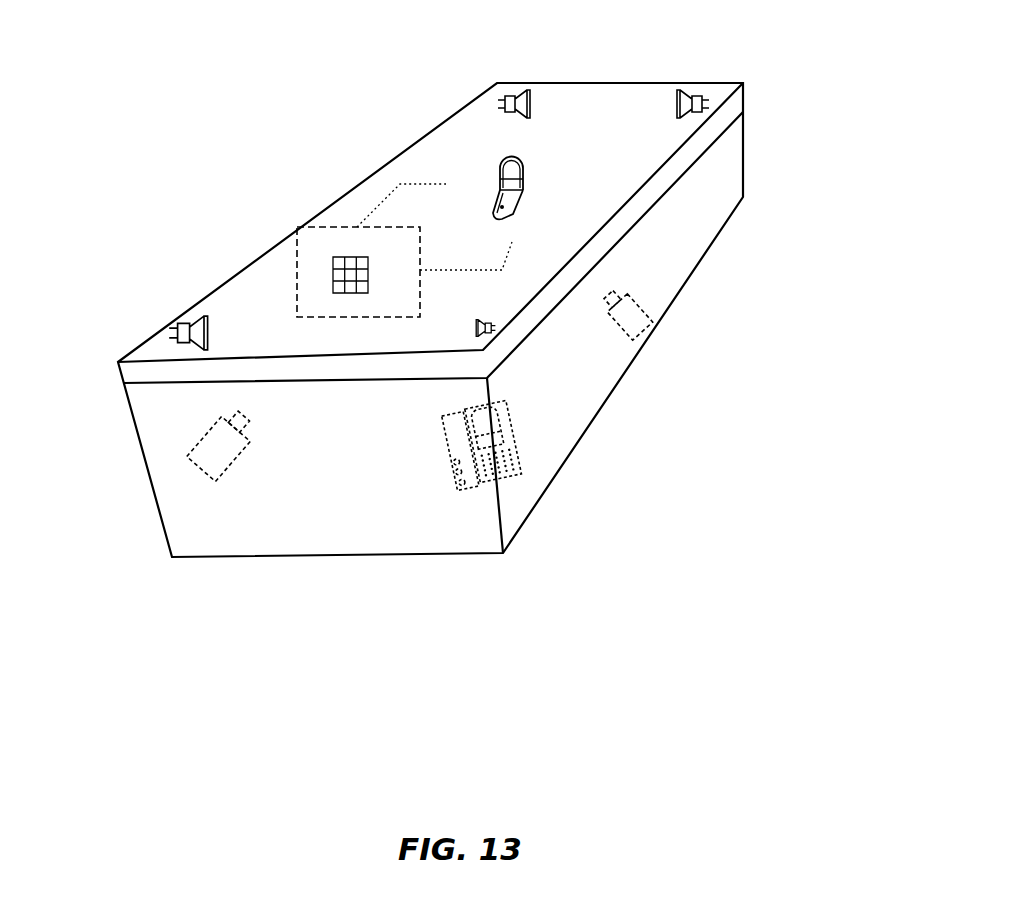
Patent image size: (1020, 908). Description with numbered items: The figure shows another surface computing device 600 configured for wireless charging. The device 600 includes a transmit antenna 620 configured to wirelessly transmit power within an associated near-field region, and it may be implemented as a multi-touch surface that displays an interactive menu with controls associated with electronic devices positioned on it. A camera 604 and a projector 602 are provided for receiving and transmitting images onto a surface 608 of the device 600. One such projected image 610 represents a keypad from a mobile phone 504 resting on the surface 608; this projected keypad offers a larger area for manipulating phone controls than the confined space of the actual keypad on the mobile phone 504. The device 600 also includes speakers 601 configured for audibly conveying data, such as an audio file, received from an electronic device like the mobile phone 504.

The surface computing device 600 is at (456, 94).
The speakers 601 is at (518, 90).
The projector 602 is at (518, 445).
The camera 604 is at (230, 462).
The mobile phone 504 is at (526, 176).
The surface 608 is at (240, 287).
The image 610 is at (357, 226).
The transmit antenna 620 is at (395, 157).